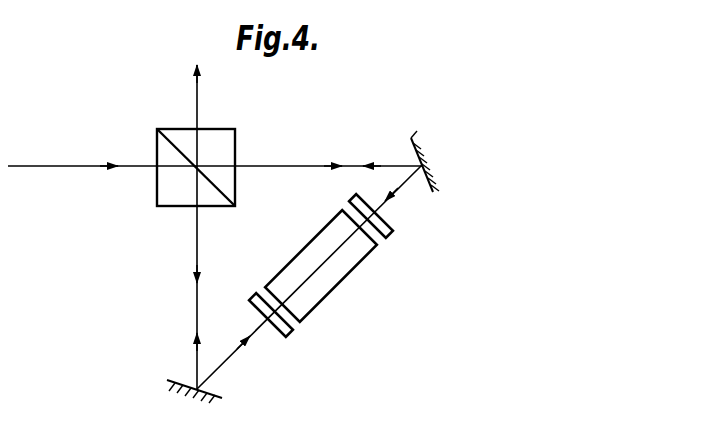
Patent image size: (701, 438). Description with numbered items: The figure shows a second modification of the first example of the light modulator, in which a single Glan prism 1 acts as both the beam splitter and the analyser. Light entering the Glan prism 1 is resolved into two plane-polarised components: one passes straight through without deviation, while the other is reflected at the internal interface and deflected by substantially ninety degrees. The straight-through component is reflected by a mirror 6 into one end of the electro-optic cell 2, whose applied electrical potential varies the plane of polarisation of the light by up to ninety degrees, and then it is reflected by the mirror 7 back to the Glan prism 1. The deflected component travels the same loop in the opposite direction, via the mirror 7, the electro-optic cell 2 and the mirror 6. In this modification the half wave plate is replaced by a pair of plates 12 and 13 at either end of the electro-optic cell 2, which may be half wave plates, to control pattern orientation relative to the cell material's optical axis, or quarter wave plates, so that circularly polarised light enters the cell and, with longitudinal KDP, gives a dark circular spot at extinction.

The Glan prism 1 is at (221, 138).
The electro-optic cell 2 is at (292, 263).
The mirror 6 is at (421, 147).
The mirror 7 is at (196, 400).
The plate 12 is at (386, 219).
The plate 13 is at (278, 336).